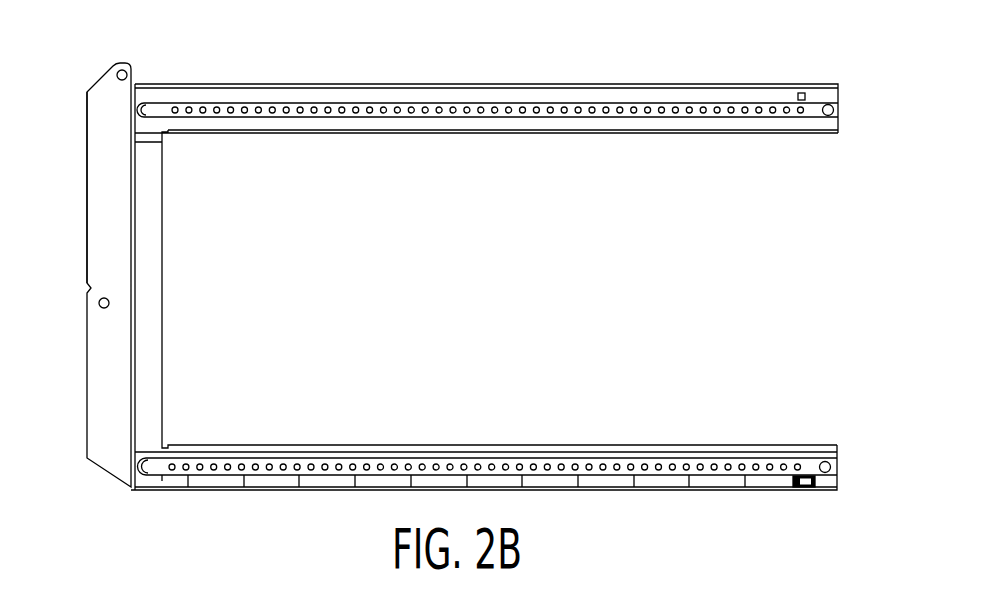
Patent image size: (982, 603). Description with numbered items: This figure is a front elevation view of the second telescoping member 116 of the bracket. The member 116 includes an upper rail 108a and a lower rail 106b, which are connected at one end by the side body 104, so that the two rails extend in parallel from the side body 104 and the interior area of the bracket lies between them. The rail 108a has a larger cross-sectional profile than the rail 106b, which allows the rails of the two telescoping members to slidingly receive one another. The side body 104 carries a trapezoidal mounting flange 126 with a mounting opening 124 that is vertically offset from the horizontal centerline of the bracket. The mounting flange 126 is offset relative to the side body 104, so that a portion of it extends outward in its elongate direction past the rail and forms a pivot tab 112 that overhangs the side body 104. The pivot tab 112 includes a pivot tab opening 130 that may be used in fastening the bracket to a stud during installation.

The pivot tab 112 is at (100, 82).
The pivot tab opening 130 is at (131, 72).
The mounting flange 126 is at (105, 191).
The mounting opening 124 is at (110, 307).
The side body 104 is at (153, 386).
The rail 108a is at (553, 98).
The rail 106b is at (424, 480).
The telescoping member 116 is at (842, 217).